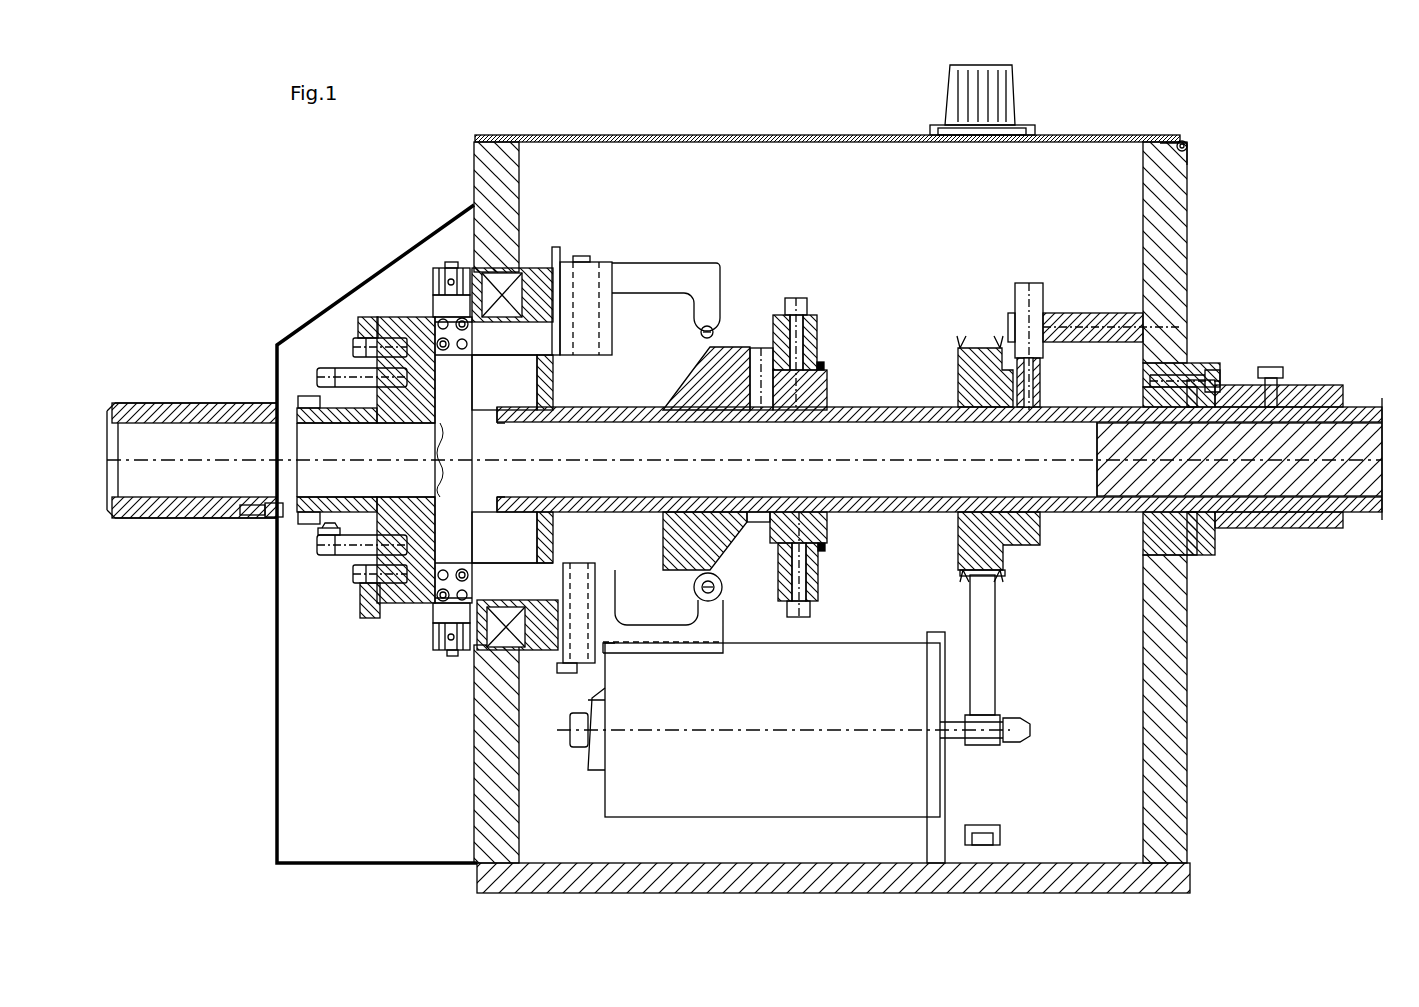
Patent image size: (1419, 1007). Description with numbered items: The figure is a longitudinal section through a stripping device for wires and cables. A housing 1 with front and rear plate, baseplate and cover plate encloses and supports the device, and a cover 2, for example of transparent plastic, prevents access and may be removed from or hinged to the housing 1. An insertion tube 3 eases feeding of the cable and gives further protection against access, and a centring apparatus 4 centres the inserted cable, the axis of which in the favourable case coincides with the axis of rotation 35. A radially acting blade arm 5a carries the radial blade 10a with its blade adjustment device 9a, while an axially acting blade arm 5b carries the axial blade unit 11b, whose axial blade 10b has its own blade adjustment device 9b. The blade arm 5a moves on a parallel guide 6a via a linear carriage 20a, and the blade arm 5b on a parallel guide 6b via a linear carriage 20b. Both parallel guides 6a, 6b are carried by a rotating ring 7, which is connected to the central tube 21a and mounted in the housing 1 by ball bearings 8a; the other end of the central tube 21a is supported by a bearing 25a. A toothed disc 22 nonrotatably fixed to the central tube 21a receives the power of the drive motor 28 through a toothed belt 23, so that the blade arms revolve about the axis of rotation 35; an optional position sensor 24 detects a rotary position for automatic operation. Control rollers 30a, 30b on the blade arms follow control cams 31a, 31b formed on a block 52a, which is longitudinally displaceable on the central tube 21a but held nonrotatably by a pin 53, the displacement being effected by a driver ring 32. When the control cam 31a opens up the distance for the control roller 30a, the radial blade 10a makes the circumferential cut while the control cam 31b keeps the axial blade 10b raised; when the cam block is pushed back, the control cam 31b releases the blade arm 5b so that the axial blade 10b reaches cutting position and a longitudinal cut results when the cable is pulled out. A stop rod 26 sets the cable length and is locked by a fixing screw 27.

The housing 1 is at (500, 200).
The cover 2 is at (417, 230).
The insertion tube 3 is at (218, 510).
The axis of rotation 35 is at (280, 507).
The centring apparatus 4 is at (440, 600).
The blade arm 5a is at (500, 328).
The blade arm 5b is at (500, 588).
The parallel guide 6a is at (568, 390).
The parallel guide 6b is at (350, 612).
The rotating ring 7 is at (543, 303).
The ball bearings 8a is at (505, 628).
The blade adjustment device 9a is at (442, 303).
The blade adjustment device 9b is at (445, 638).
The radial blade 10a is at (502, 428).
The axial blade 10b is at (502, 492).
The axial blade unit 11b is at (325, 560).
The linear carriage 20a is at (445, 268).
The linear carriage 20b is at (577, 640).
The central tube 21a is at (905, 412).
The toothed disc 22 is at (1013, 523).
The toothed belt 23 is at (983, 597).
The position sensor 24 is at (818, 363).
The bearing 25a is at (1180, 508).
The stop rod 26 is at (1217, 468).
The fixing screw 27 is at (1268, 372).
The drive motor 28 is at (858, 748).
The control roller 30a is at (713, 343).
The control roller 30b is at (698, 587).
The control cam 31a is at (740, 340).
The control cam 31b is at (712, 520).
The driver ring 32 is at (1033, 325).
The block 52a is at (815, 565).
The pin 53 is at (813, 345).